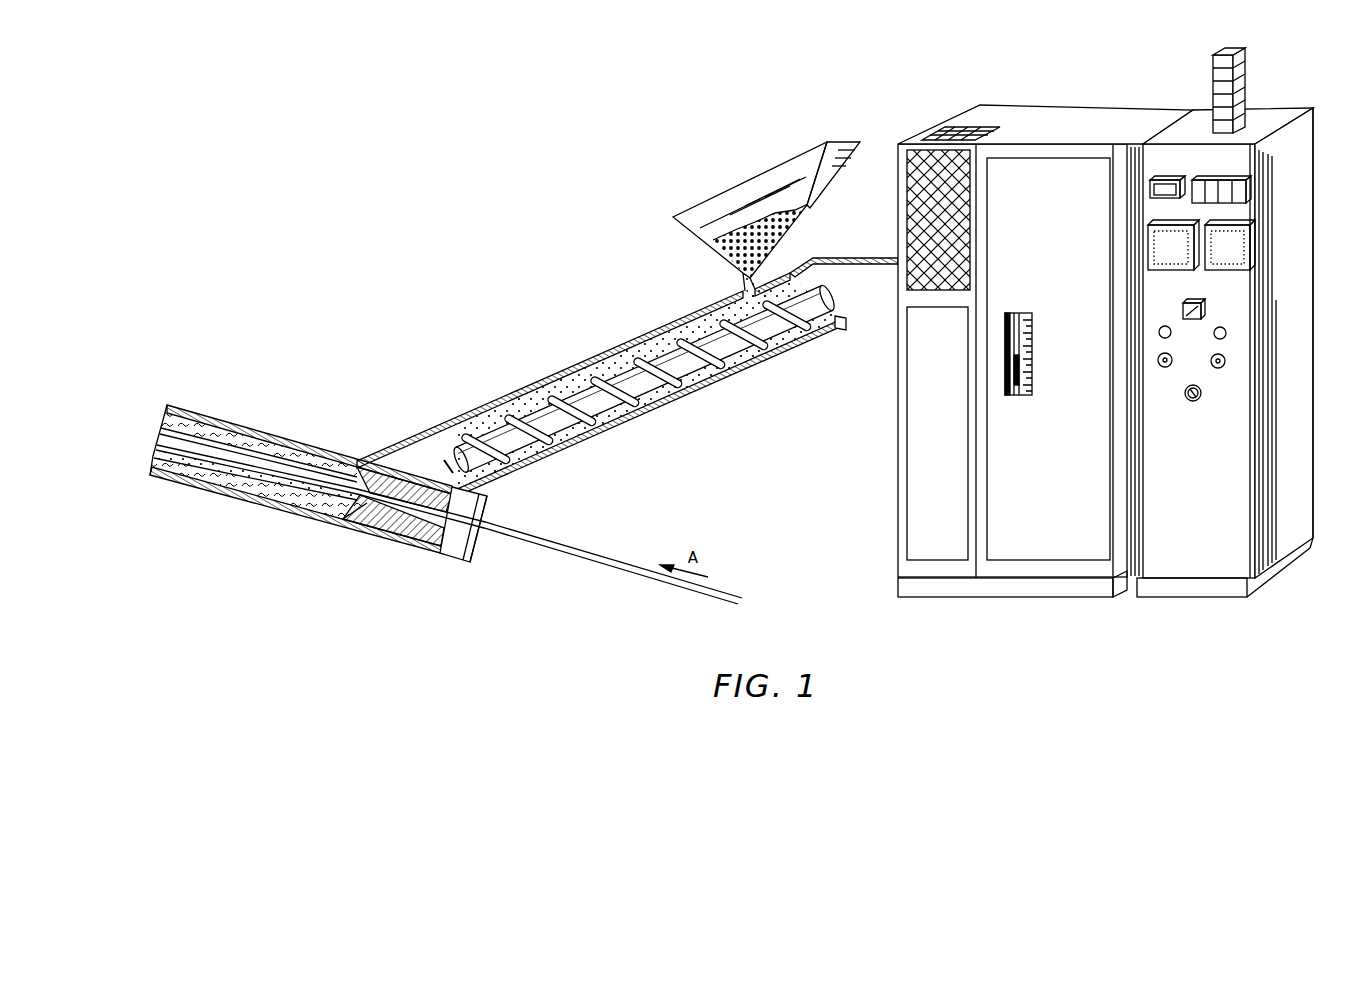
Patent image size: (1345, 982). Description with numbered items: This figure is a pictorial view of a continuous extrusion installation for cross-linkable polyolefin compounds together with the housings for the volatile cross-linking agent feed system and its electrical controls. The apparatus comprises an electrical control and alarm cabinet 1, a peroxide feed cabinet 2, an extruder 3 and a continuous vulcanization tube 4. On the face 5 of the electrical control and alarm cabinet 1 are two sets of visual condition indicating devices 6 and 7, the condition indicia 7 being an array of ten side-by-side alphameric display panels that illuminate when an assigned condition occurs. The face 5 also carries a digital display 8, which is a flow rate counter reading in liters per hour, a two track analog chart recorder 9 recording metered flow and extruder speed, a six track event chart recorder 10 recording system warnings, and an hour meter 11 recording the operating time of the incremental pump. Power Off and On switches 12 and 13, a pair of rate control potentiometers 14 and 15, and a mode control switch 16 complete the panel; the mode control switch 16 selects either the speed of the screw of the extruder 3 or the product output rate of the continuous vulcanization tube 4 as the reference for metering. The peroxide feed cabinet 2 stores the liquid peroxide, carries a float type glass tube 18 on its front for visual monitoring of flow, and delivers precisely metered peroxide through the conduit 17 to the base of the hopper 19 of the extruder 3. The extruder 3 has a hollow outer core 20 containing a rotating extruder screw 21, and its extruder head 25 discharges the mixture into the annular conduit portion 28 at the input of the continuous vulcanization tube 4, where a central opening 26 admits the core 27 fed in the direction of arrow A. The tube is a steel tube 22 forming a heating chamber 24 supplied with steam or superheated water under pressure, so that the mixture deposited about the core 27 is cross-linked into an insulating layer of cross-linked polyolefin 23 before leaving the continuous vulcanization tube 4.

The electrical control and alarm cabinet 1 is at (1313, 452).
The peroxide feed cabinet 2 is at (1045, 372).
The extruder 3 is at (617, 385).
The continuous vulcanization tube 4 is at (471, 545).
The face 5 is at (1201, 343).
The visual condition indicating devices 6 is at (1245, 82).
The condition indicia 7 is at (1252, 190).
The digital display 8 is at (1150, 187).
The chart recorder 9 is at (1148, 240).
The chart recorder 10 is at (1250, 248).
The hour meter 11 is at (1200, 302).
The power Off switch 12 is at (1163, 326).
The power On switch 13 is at (1226, 330).
The rate control potentiometer 14 is at (1164, 368).
The rate control potentiometer 15 is at (1220, 369).
The mode control switch 16 is at (1195, 402).
The conduit 17 is at (855, 266).
The float type glass tube 18 is at (1030, 372).
The hopper 19 is at (822, 200).
The hollow outer core 20 is at (772, 362).
The extruder screw 21 is at (838, 308).
The steel tube 22 is at (297, 442).
The insulating layer of cross-linked polyolefin 23 is at (200, 470).
The heating chamber 24 is at (281, 479).
The extruder head 25 is at (389, 530).
The central opening 26 is at (478, 540).
The core 27 is at (603, 566).
The annular conduit portion 28 is at (357, 524).